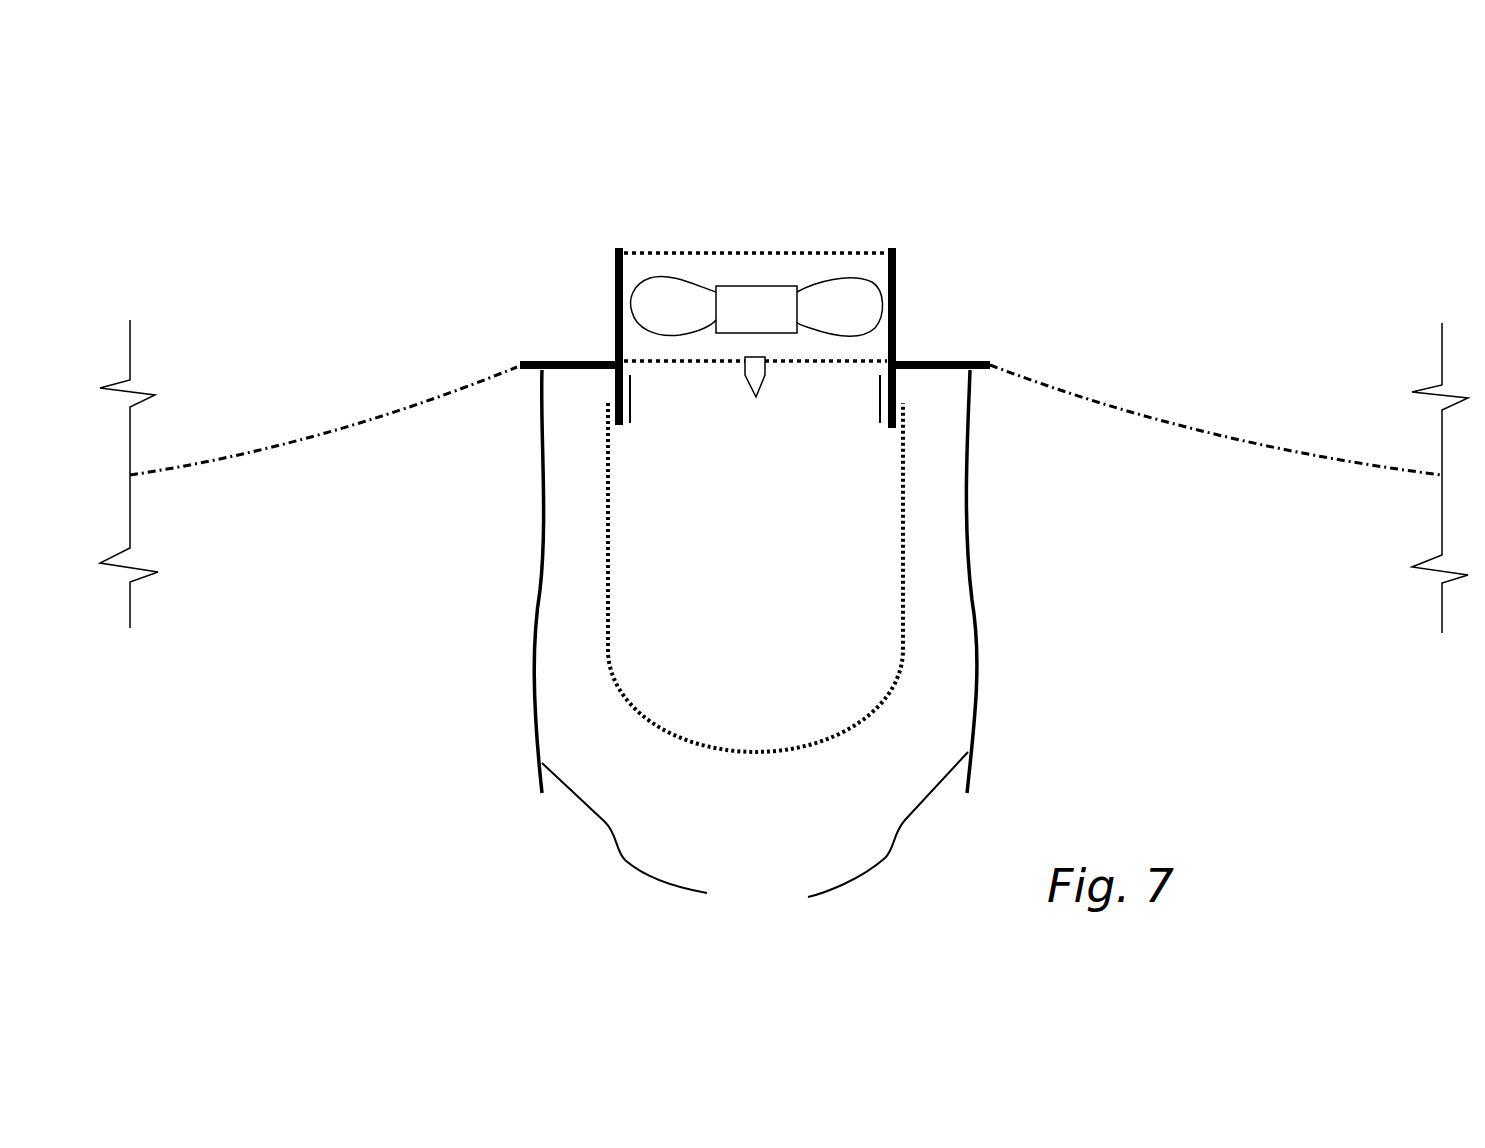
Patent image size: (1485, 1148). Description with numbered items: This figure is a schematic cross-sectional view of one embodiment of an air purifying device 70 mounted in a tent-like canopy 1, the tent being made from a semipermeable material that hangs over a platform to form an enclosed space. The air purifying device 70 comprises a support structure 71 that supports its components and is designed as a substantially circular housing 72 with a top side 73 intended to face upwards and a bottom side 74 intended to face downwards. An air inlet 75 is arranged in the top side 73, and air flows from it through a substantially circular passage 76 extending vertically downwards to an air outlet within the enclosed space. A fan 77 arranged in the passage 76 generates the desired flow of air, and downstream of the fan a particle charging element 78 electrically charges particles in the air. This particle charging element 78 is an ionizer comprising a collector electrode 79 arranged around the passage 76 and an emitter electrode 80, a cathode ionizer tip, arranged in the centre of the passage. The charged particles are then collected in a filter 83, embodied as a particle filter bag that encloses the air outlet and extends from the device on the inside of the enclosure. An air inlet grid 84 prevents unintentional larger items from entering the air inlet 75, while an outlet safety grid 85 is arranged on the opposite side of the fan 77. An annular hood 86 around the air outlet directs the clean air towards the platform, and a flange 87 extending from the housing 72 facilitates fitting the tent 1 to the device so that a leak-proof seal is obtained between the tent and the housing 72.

The tent-like canopy 1 is at (366, 396).
The air purifying device 70 is at (908, 241).
The support structure 71 is at (604, 278).
The housing 72 is at (617, 250).
The top side 73 is at (621, 251).
The bottom side 74 is at (888, 428).
The air inlet 75 is at (833, 252).
The passage 76 is at (887, 272).
The fan 77 is at (853, 303).
The particle charging element 78 is at (778, 384).
The collector electrode 79 is at (882, 402).
The emitter electrode 80 is at (756, 389).
The filter 83 is at (682, 737).
The air inlet grid 84 is at (735, 252).
The outlet safety grid 85 is at (703, 358).
The annular hood 86 is at (755, 640).
The flange 87 is at (960, 360).